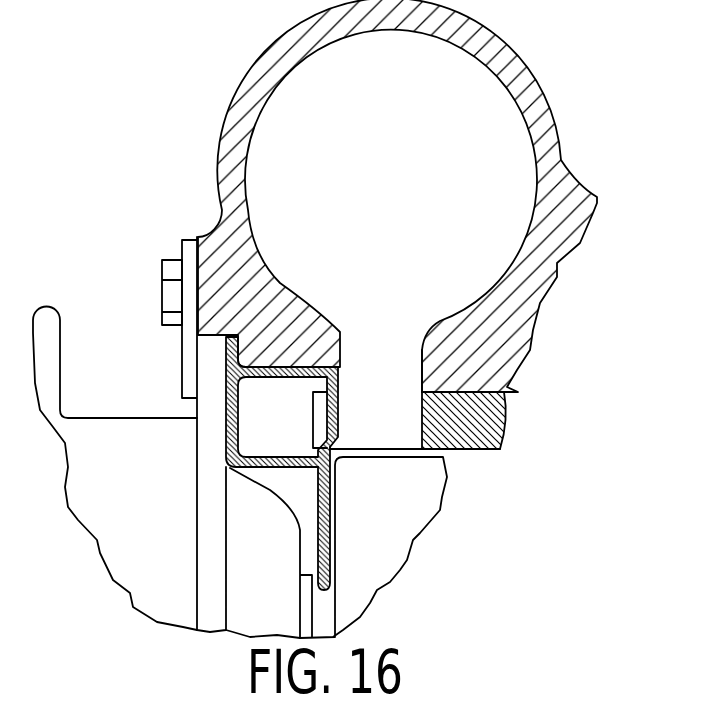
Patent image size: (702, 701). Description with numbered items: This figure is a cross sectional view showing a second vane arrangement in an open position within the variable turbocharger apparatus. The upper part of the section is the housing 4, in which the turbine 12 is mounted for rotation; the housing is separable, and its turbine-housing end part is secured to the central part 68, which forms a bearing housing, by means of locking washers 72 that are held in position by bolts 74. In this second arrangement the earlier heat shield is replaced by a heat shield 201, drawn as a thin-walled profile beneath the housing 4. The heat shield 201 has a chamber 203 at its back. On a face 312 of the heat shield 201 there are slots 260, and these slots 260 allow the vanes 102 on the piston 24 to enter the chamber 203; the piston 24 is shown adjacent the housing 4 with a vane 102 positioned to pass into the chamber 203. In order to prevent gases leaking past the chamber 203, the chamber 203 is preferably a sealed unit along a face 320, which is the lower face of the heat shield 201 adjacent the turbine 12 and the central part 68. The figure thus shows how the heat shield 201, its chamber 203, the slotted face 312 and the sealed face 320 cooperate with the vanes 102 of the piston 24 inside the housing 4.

The housing 4 is at (560, 148).
The locking washer 72 is at (190, 248).
The bolt 74 is at (172, 297).
The central part 68 is at (83, 447).
The heat shield 201 is at (227, 433).
The chamber 203 is at (267, 415).
The face 312 is at (338, 418).
The slot 260 is at (340, 420).
The vane 102 is at (371, 400).
The piston 24 is at (495, 415).
The face 320 is at (317, 468).
The turbine 12 is at (405, 478).